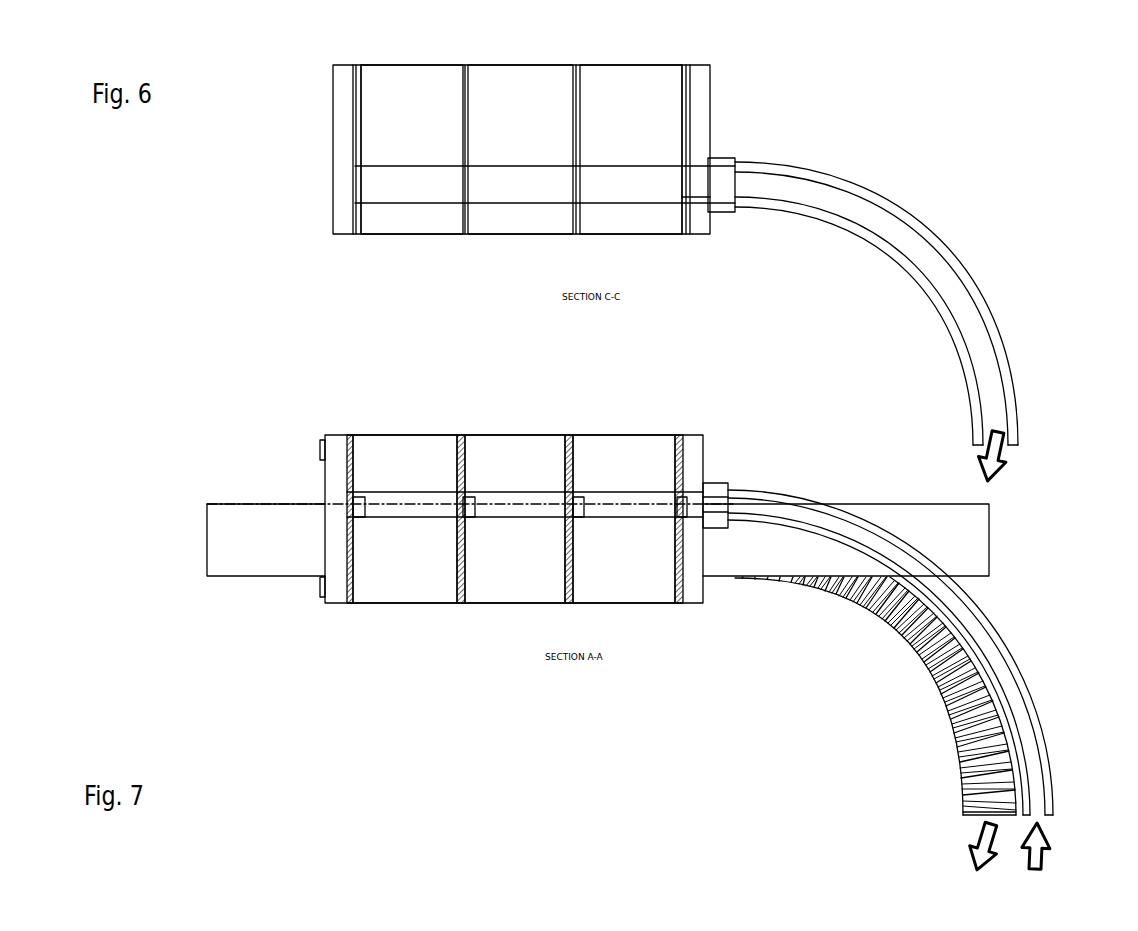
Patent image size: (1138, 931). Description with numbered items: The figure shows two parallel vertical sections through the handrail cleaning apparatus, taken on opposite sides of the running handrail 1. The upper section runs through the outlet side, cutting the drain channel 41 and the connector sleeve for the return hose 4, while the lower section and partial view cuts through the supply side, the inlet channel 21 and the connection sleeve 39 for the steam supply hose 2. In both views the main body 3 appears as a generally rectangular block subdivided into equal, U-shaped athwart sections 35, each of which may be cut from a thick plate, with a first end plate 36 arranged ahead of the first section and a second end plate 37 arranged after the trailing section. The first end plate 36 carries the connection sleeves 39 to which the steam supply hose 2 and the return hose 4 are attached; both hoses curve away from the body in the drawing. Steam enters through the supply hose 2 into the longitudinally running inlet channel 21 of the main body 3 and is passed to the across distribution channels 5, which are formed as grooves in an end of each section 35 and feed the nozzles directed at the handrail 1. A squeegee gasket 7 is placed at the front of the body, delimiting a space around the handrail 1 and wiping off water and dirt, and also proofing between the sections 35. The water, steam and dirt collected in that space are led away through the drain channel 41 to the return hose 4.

In FIG. 7, the handrail 1 is at (977, 555).
In FIG. 7, the steam supply hose 2 is at (1015, 700).
In FIG. 6, the main body 3 is at (590, 55).
In FIG. 7, the main body 3 is at (590, 413).
In FIG. 6, the return hose 4 is at (922, 257).
In FIG. 7, the distribution channel 5 is at (360, 503).
In FIG. 7, the squeegee gasket 7 is at (347, 455).
In FIG. 7, the inlet channel 21 is at (620, 503).
In FIG. 6, the section 35 is at (418, 235).
In FIG. 7, the section 35 is at (405, 603).
In FIG. 6, the first end plate 36 is at (695, 112).
In FIG. 7, the first end plate 36 is at (692, 460).
In FIG. 6, the second end plate 37 is at (333, 115).
In FIG. 7, the second end plate 37 is at (333, 465).
In FIG. 6, the connection sleeve 39 is at (725, 162).
In FIG. 7, the connection sleeve 39 is at (720, 487).
In FIG. 6, the drain channel 41 is at (418, 184).